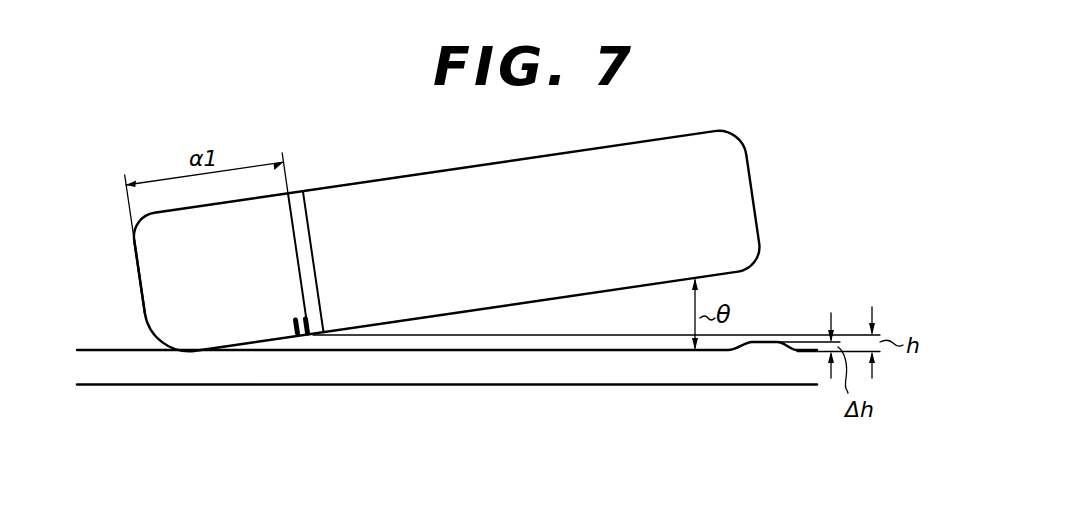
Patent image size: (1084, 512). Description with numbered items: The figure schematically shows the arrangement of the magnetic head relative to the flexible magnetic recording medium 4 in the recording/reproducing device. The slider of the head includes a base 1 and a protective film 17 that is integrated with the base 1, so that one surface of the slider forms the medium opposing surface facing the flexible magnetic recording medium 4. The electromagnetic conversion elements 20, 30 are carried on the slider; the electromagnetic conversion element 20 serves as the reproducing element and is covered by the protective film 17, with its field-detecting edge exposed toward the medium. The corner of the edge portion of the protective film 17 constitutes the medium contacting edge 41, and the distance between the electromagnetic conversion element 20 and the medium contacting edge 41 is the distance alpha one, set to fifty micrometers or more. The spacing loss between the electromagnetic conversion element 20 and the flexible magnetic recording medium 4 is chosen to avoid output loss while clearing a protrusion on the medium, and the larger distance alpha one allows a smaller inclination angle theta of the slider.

The base 1 is at (397, 197).
The protective film 17 is at (153, 265).
The electromagnetic conversion element 20 is at (323, 310).
The electromagnetic conversion element 30 is at (295, 327).
The medium contacting edge 41 is at (161, 352).
The flexible magnetic recording medium 4 is at (294, 370).